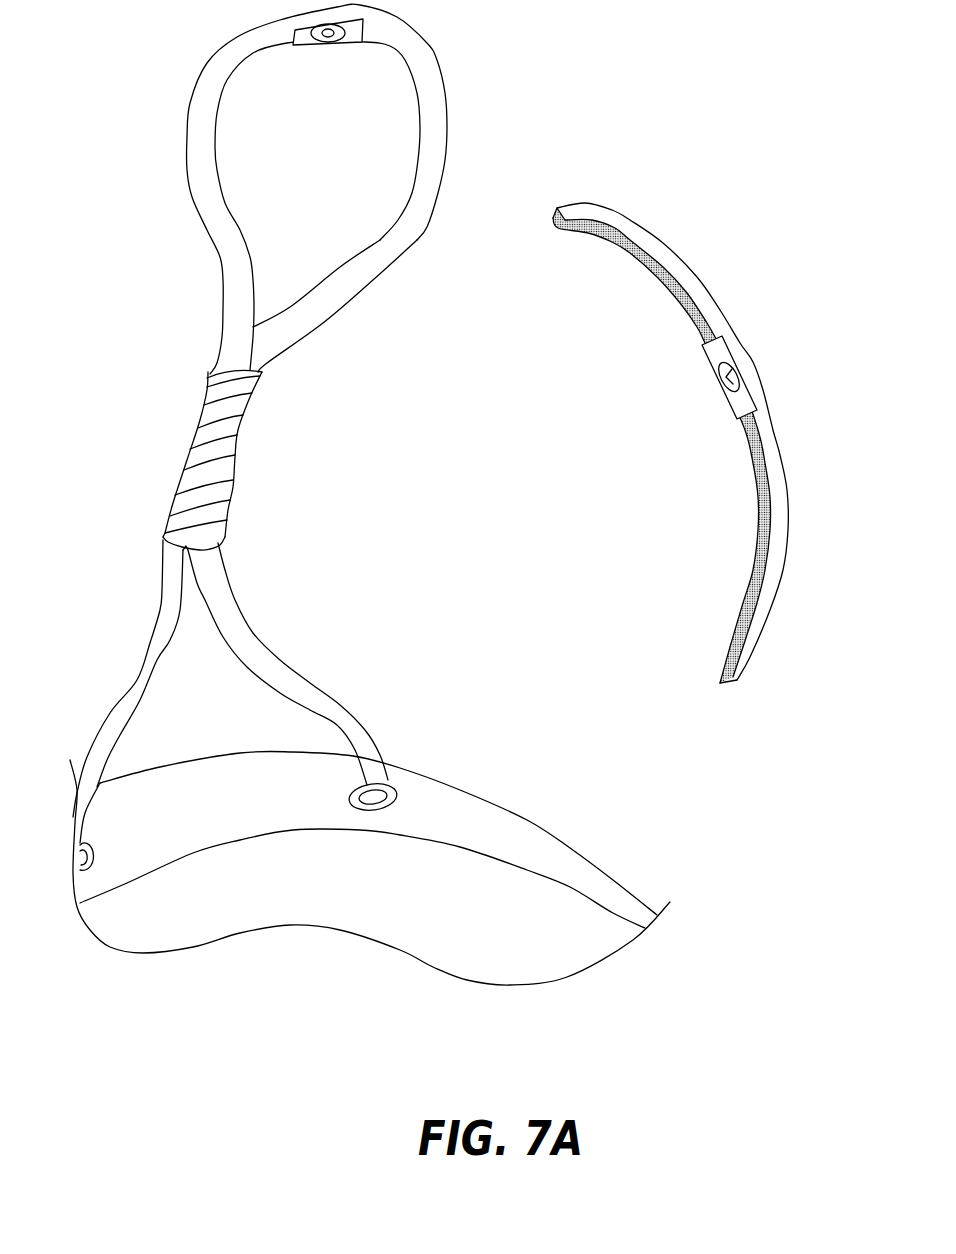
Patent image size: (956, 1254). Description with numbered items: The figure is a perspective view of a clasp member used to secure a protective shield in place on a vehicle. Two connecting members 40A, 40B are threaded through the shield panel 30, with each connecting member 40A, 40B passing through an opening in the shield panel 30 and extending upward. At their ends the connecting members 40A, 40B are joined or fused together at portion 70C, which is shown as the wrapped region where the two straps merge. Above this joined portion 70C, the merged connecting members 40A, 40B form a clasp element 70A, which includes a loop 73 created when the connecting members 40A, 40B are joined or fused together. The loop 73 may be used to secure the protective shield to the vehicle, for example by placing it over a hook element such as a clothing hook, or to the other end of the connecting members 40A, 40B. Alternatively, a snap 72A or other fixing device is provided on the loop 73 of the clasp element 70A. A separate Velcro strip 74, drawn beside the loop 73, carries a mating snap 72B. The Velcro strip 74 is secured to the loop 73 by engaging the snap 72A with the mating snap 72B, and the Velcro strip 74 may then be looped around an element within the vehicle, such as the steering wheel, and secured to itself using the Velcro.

The clasp element 70A is at (468, 97).
The snap 72A is at (318, 44).
The loop 73 is at (370, 277).
The portion 70C is at (238, 440).
The connecting member 40A is at (160, 623).
The connecting member 40B is at (258, 647).
The shield panel 30 is at (467, 870).
The Velcro strip 74 is at (775, 540).
The mating snap 72B is at (723, 385).